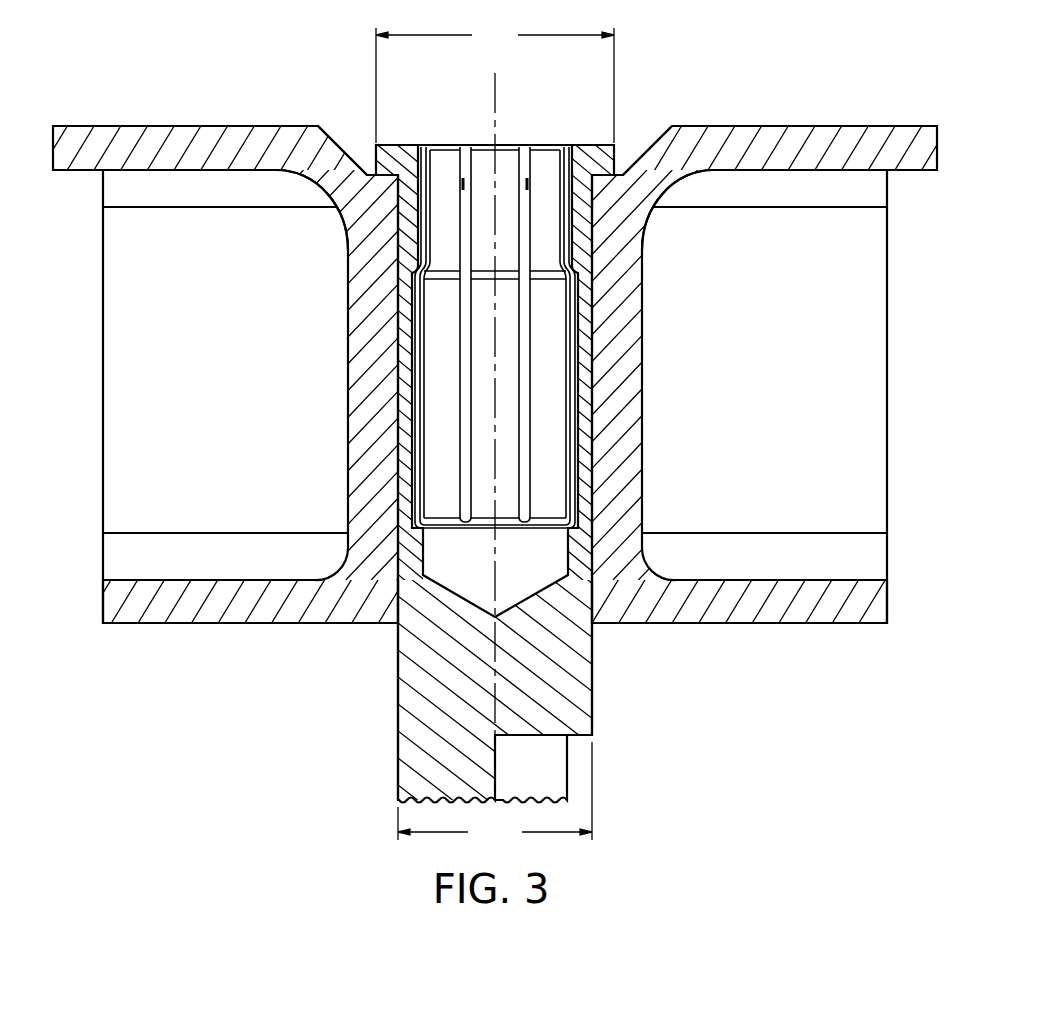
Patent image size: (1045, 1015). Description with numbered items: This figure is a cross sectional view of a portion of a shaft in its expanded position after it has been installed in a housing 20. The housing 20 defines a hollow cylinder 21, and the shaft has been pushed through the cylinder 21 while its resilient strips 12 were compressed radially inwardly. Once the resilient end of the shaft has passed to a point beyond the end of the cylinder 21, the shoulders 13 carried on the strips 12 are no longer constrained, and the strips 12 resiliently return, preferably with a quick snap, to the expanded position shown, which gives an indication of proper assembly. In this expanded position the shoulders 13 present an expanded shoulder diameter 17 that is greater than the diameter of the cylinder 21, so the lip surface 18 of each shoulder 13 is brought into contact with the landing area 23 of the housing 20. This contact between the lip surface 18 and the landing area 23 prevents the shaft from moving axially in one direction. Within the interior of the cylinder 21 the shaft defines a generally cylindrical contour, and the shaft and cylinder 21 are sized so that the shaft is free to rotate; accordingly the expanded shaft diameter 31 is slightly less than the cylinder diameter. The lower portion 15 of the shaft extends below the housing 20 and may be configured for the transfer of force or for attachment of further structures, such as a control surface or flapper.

The housing 20 is at (193, 132).
The hollow cylinder 21 is at (398, 355).
The landing area 23 is at (342, 207).
The lip surface 18 is at (383, 170).
The shoulder 13 is at (595, 152).
The strips 12 is at (558, 345).
The lower portion 15 is at (398, 738).
The expanded shoulder diameter 17 is at (495, 81).
The expanded shaft diameter 31 is at (495, 795).